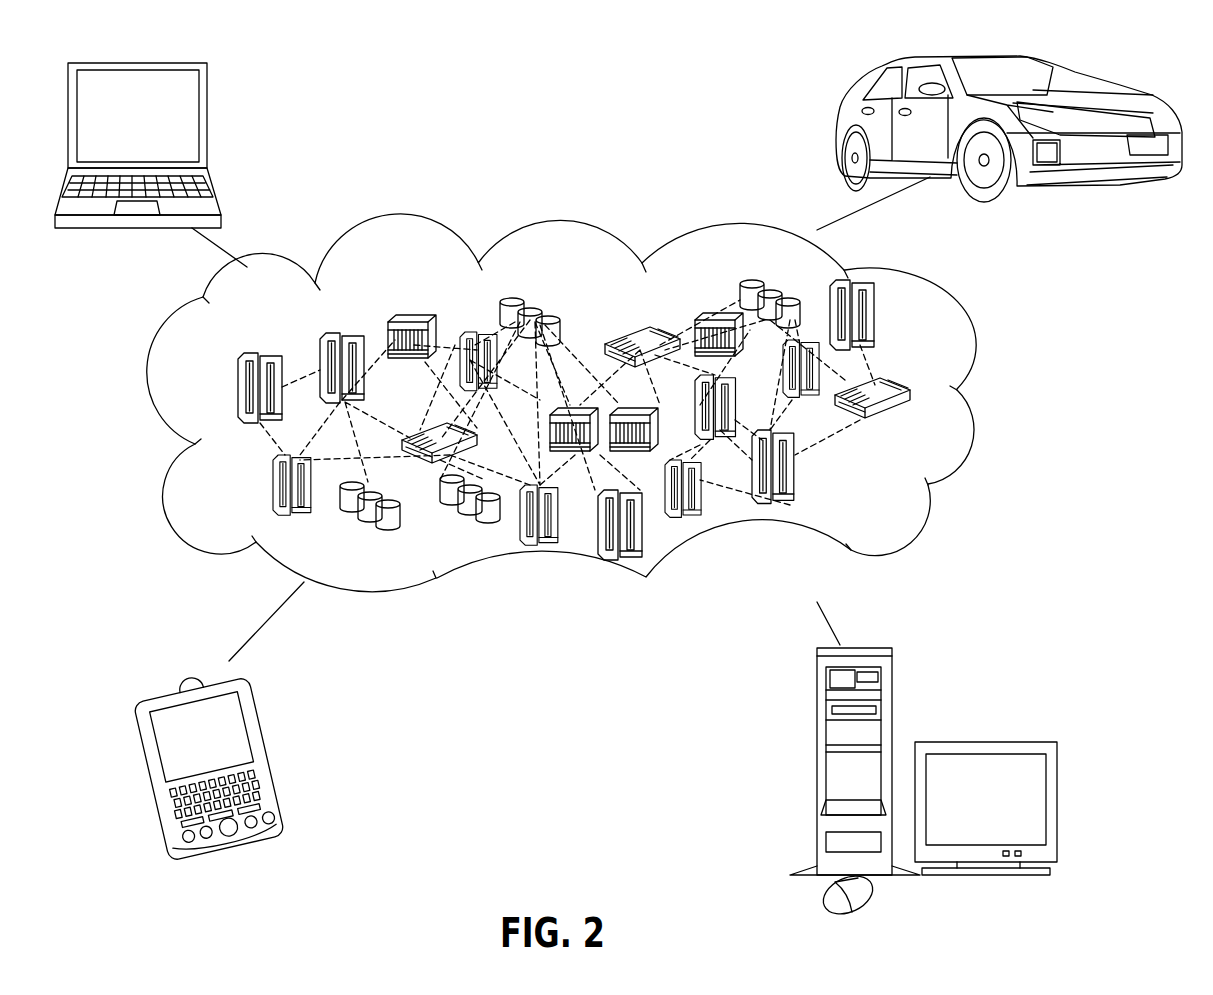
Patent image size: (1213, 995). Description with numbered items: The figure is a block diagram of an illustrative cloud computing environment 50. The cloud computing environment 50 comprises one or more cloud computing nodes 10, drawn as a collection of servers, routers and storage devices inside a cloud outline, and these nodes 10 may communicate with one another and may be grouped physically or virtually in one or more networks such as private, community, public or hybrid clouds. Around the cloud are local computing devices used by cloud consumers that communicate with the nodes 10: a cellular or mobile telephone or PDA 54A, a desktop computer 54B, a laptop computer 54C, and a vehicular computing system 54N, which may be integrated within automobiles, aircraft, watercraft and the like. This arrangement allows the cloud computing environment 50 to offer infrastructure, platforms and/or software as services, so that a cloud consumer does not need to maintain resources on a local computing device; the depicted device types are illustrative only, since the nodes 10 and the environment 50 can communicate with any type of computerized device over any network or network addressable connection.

The cloud computing node 10 is at (895, 503).
The cloud computing environment 50 is at (976, 405).
The cellular telephone or PDA 54A is at (262, 720).
The desktop computer 54B is at (818, 708).
The laptop computer 54C is at (207, 102).
The vehicular computing system 54N is at (838, 118).